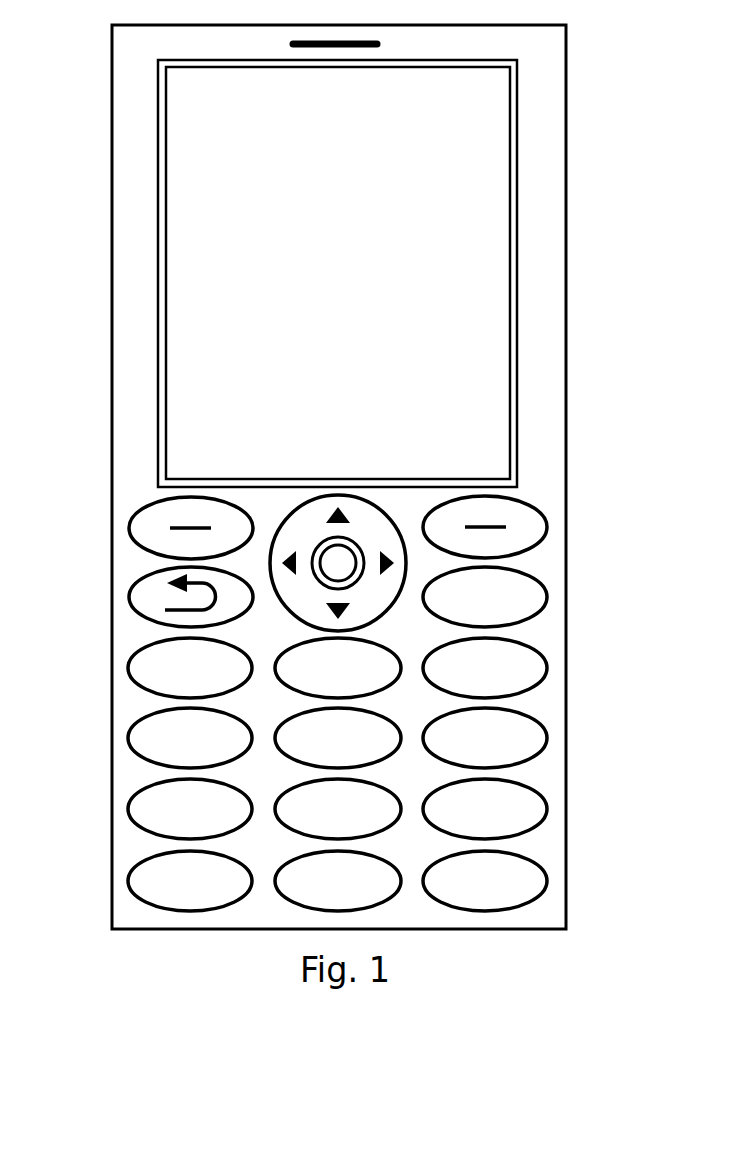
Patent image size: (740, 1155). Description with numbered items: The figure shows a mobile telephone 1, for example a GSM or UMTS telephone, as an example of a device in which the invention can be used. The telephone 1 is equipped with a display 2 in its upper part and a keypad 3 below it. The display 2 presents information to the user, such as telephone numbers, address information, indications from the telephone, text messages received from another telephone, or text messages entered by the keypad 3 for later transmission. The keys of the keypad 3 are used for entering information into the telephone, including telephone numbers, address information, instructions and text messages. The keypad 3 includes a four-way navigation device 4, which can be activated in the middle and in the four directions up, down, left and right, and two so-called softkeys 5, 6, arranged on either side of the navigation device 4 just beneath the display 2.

The mobile telephone 1 is at (567, 179).
The display 2 is at (517, 338).
The keypad 3 is at (609, 636).
The 4-way navigation device 4 is at (302, 576).
The softkey 5 is at (136, 514).
The softkey 6 is at (542, 512).